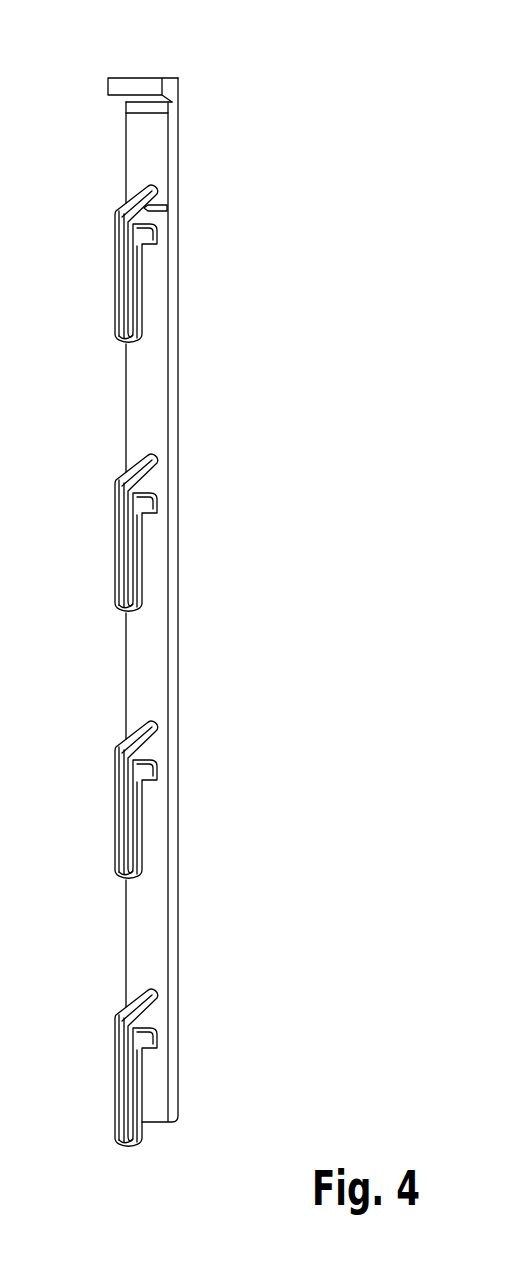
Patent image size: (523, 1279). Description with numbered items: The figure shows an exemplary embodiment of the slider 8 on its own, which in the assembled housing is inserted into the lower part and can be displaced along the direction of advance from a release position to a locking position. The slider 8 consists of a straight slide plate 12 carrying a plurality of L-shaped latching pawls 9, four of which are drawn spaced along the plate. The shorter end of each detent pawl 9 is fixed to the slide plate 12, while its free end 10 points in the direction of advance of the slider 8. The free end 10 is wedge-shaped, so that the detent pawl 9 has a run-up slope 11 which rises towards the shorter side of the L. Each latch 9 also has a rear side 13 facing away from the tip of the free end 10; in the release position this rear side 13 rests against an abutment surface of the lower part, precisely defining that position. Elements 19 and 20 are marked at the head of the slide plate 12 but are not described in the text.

The slider 8 is at (281, 85).
The latching pawl 9 is at (116, 277).
The free end 10 is at (116, 337).
The run-up slope 11 is at (143, 283).
The slide plate 12 is at (148, 385).
The rear side 13 is at (125, 200).
The head portion 19 is at (141, 78).
The shoulder 20 is at (123, 106).